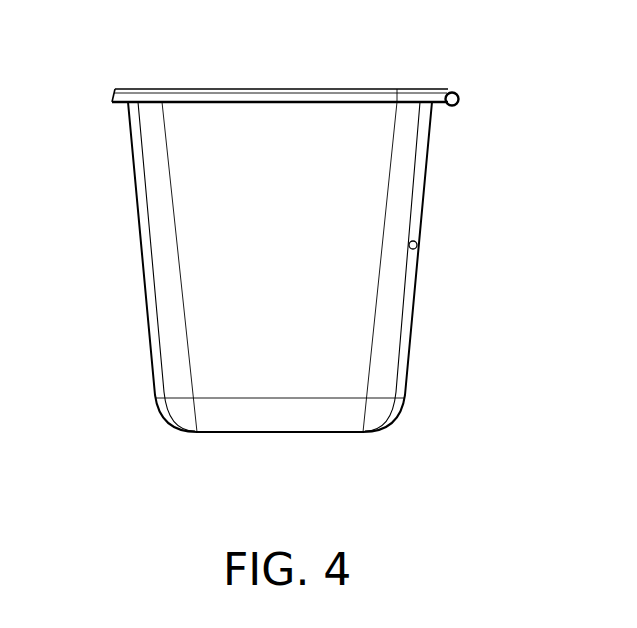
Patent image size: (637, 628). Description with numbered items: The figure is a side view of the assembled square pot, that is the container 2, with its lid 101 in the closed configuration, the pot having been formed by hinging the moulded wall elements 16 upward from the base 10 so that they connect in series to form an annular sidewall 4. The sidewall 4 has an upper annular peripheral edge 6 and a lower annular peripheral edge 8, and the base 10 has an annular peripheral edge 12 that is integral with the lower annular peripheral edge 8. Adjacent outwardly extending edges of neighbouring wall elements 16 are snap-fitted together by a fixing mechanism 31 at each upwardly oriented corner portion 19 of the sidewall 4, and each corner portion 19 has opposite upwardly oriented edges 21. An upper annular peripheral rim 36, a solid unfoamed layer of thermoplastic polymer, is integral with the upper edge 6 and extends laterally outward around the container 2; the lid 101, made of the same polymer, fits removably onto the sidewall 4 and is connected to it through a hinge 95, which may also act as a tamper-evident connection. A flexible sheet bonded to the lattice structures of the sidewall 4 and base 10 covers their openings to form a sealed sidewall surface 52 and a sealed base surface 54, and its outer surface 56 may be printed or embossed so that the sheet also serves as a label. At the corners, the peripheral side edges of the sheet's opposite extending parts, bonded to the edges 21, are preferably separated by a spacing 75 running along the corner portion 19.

The container 2 is at (182, 153).
The sidewall 4 is at (198, 125).
The upper annular peripheral edge 6 is at (232, 110).
The lid 101 is at (262, 88).
The wall element 16 is at (355, 128).
The upper annular peripheral rim 36 is at (428, 100).
The hinge 95 is at (450, 92).
The corner portion 19 is at (428, 142).
The upwardly oriented edge 21 is at (142, 195).
The fixing mechanism 31 is at (418, 250).
The spacing 75 is at (403, 317).
The outer surface 56 is at (202, 362).
The annular peripheral edge 12 is at (220, 402).
The lower annular peripheral edge 8 is at (277, 385).
The base 10 is at (270, 433).
The sealed base surface 54 is at (335, 432).
The sealed sidewall surface 52 is at (353, 340).